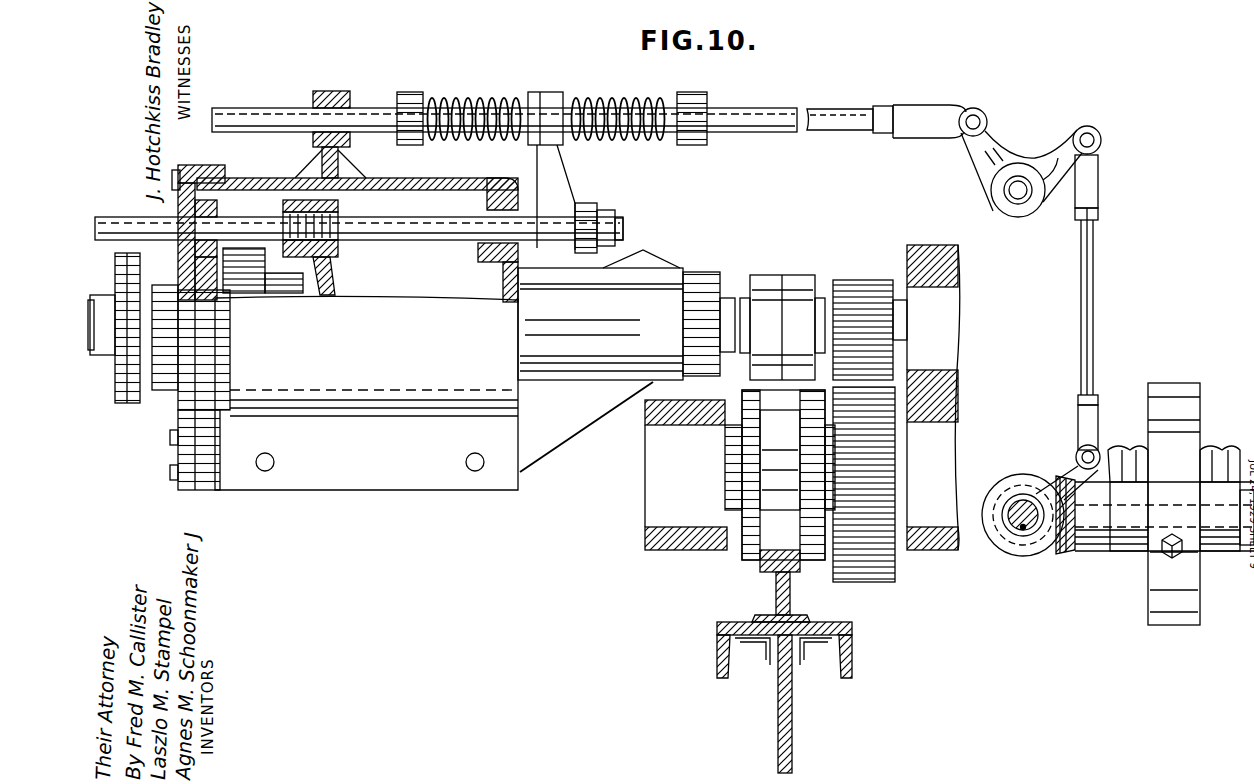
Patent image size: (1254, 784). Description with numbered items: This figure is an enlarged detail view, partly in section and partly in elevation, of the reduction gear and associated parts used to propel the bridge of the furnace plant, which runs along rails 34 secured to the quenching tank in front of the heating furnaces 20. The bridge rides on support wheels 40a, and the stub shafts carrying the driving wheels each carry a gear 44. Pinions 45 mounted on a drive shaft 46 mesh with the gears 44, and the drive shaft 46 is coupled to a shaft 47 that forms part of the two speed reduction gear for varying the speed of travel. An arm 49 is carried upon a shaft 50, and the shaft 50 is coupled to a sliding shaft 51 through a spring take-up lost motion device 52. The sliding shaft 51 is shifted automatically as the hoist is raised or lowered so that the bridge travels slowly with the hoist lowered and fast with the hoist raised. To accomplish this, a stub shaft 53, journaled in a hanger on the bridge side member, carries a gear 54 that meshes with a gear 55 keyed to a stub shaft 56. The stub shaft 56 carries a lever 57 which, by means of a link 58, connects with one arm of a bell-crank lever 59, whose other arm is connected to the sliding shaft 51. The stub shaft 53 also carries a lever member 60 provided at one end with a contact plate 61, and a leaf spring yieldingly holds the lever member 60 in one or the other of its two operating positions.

The heating furnaces 20 is at (793, 724).
The rails 34 is at (790, 597).
The support wheels 40a is at (763, 537).
The gear 44 is at (878, 578).
The pinions 45 is at (863, 283).
The drive shaft 46 is at (903, 325).
The shaft 47 is at (725, 292).
The arm 49 is at (333, 273).
The shaft 50 is at (455, 241).
The sliding shaft 51 is at (757, 110).
The spring take-up lost motion device 52 is at (487, 104).
The stub shaft 53 is at (1248, 540).
The gear 54 is at (1062, 557).
The gear 55 is at (1008, 553).
The stub shaft 56 is at (1020, 507).
The lever 57 is at (1070, 463).
The link 58 is at (1097, 298).
The bell-crank lever 59 is at (1012, 145).
The lever member 60 is at (1203, 406).
The contact plate 61 is at (1178, 627).